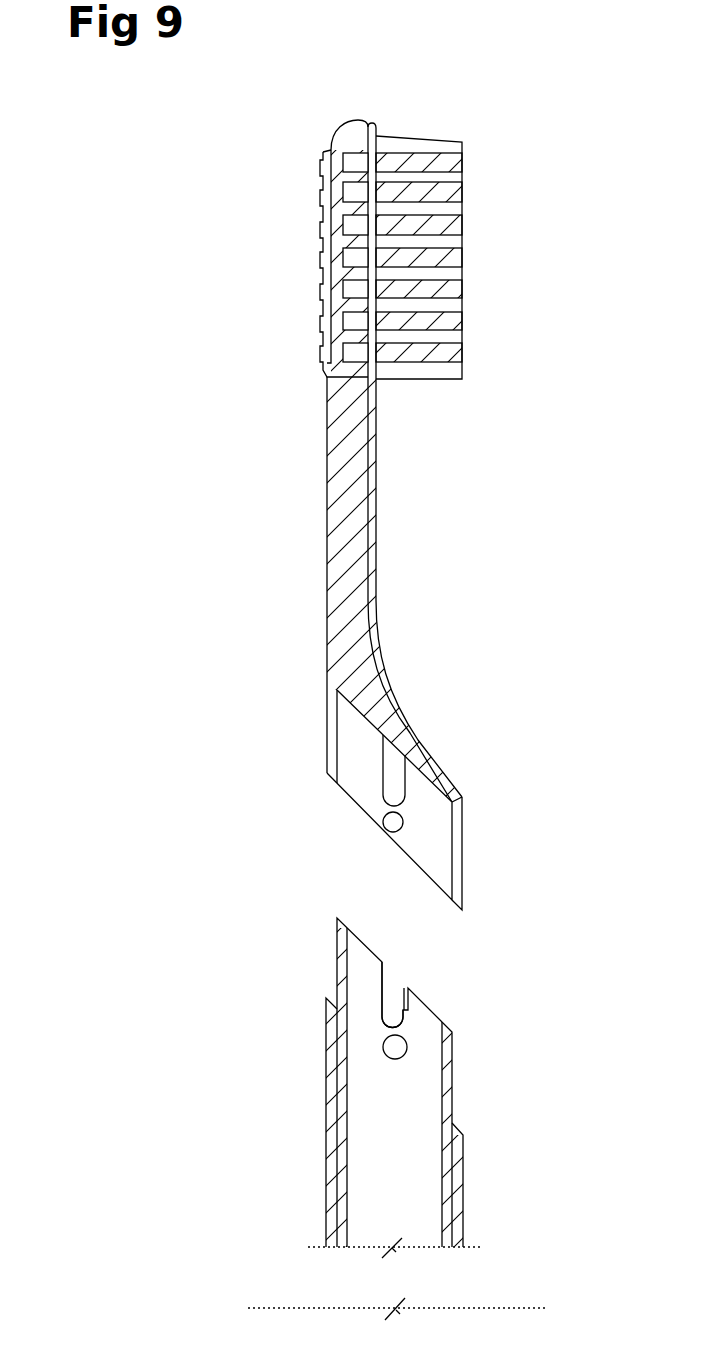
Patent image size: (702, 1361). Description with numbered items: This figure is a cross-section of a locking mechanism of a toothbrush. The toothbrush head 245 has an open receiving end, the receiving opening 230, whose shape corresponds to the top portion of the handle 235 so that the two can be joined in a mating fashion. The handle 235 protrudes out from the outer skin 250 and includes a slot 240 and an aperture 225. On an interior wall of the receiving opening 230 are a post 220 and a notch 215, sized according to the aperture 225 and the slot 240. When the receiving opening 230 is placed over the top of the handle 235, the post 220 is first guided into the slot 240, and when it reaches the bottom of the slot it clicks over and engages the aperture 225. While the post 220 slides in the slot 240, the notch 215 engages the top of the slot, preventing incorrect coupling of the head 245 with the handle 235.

The notch 215 is at (400, 783).
The post 220 is at (383, 822).
The aperture 225 is at (384, 1041).
The receiving opening 230 is at (360, 755).
The handle 235 is at (337, 957).
The slot 240 is at (392, 1010).
The toothbrush head 245 is at (377, 505).
The outer skin 250 is at (462, 1168).